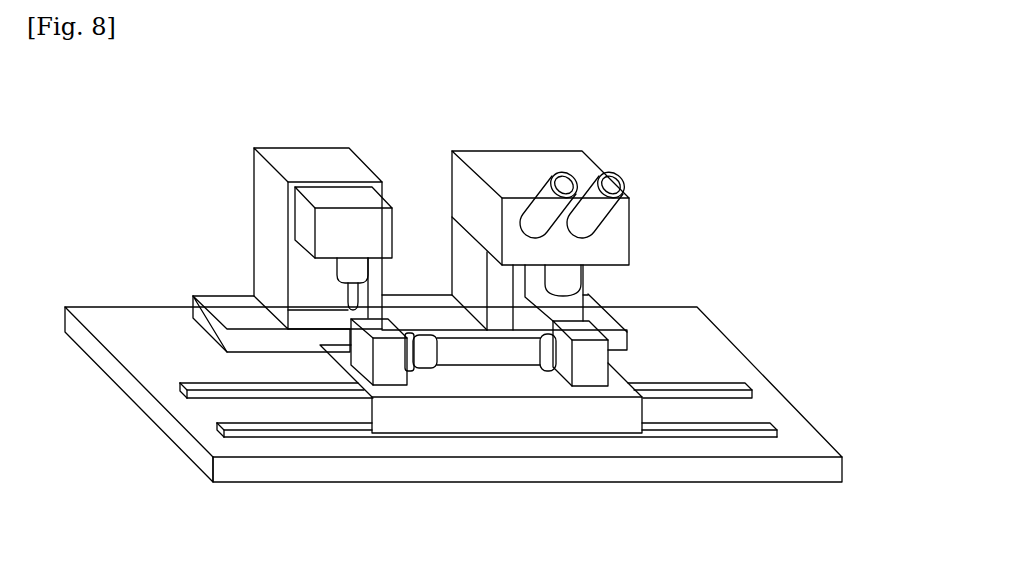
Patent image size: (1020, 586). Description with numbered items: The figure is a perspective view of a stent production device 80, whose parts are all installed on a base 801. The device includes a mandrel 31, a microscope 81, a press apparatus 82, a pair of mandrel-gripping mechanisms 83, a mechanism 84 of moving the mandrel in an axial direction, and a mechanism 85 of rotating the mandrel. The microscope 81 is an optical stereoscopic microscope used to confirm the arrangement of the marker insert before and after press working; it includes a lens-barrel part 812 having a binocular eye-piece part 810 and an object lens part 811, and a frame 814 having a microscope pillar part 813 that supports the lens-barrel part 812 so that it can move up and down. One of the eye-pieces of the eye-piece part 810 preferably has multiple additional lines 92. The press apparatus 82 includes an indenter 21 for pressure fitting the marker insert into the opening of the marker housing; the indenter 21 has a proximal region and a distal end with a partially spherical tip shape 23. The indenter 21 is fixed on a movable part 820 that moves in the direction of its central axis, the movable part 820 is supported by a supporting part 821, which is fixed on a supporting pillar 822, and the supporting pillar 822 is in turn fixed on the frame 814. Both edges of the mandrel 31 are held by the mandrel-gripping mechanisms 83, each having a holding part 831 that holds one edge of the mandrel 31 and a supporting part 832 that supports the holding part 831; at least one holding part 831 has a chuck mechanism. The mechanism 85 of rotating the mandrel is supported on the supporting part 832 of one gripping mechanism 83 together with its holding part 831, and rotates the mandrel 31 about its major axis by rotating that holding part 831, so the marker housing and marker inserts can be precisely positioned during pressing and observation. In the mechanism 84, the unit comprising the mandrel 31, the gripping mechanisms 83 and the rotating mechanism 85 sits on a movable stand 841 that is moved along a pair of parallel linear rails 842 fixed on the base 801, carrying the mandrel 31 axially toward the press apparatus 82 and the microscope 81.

The base 801 is at (797, 470).
The partially spherical tip shape 23 is at (206, 333).
The press apparatus 82 is at (289, 213).
The supporting pillar 822 is at (268, 209).
The supporting part 821 is at (337, 193).
The movable part 820 is at (358, 268).
The indenter 21 is at (345, 294).
The stent production device 80 is at (608, 216).
The frame 814 is at (612, 322).
The microscope 81 is at (547, 206).
The microscope pillar part 813 is at (455, 237).
The lens-barrel part 812 is at (484, 153).
The object lens part 811 is at (566, 280).
The binocular eye-piece part 810 is at (548, 232).
The additional lines 92 is at (563, 180).
The mandrel-gripping mechanism 83 is at (482, 433).
The mechanism of rotating a mandrel 85 is at (412, 372).
The holding part 831 is at (427, 366).
The mandrel 31 is at (460, 366).
The supporting part 832 is at (590, 380).
The mechanism of moving a mandrel in an axial direction 84 is at (518, 452).
The movable stand 841 is at (510, 414).
The linear rails 842 is at (746, 388).